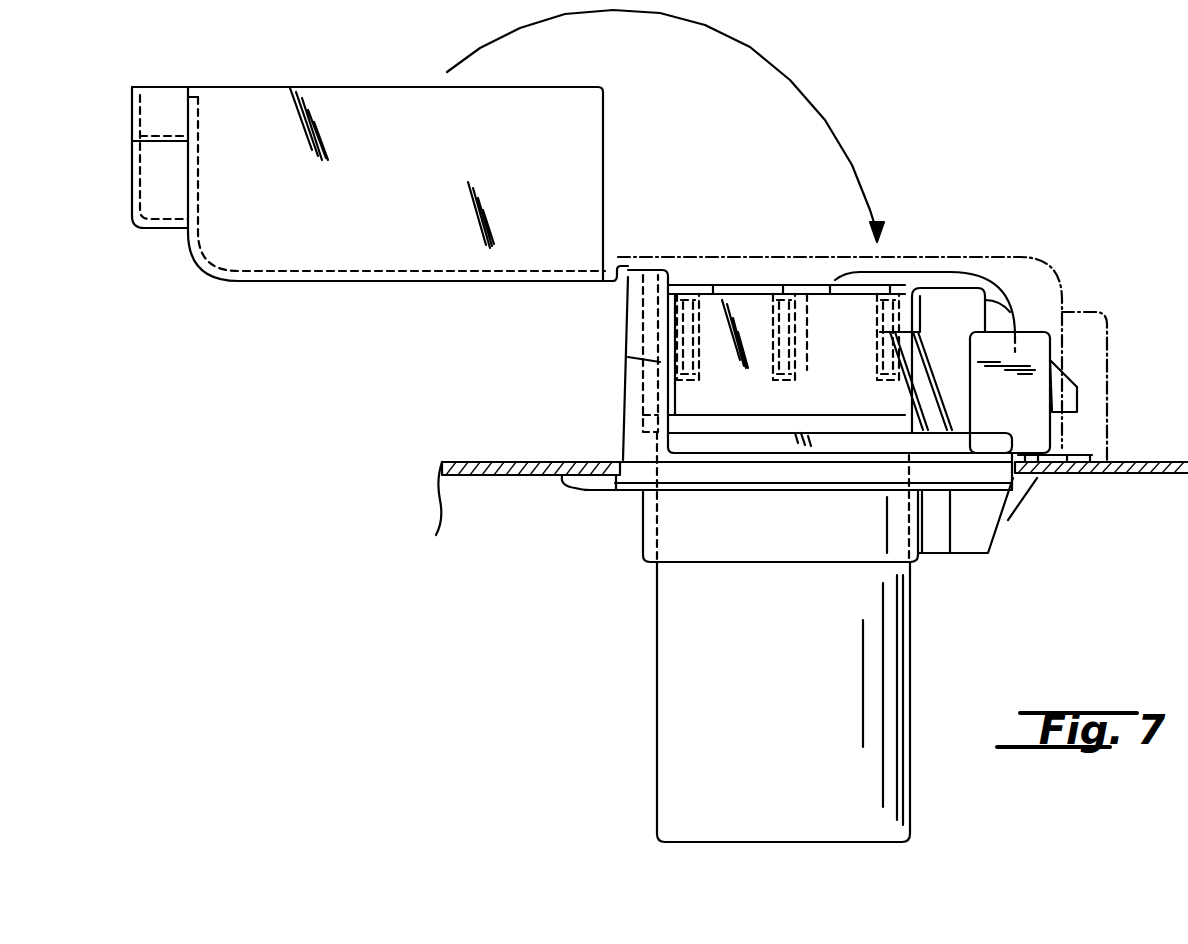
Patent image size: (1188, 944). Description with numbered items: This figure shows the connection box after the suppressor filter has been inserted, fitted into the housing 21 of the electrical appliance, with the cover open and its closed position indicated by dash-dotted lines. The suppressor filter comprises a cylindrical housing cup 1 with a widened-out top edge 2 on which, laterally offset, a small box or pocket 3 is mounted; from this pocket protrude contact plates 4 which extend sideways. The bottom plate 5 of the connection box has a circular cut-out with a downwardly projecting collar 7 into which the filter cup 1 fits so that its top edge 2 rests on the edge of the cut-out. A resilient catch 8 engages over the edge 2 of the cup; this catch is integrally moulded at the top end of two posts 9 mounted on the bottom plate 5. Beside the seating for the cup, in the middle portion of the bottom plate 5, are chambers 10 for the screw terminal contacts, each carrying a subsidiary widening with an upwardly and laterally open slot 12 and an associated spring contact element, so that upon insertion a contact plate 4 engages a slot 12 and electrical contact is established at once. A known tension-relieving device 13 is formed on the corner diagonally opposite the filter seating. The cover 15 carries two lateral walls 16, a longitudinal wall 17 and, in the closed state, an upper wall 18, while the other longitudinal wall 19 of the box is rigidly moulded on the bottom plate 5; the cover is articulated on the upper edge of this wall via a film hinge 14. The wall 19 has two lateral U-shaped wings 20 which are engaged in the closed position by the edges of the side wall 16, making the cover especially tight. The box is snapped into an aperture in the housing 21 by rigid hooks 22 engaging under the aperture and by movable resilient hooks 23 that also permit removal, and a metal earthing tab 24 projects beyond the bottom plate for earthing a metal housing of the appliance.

The housing cup 1 is at (668, 745).
The top edge 2 is at (738, 434).
The box or pocket 3 is at (830, 312).
The contact plate 4 is at (687, 310).
The bottom plate 5 is at (977, 445).
The collar 7 is at (647, 552).
The resilient catch 8 is at (887, 412).
The post 9 is at (930, 398).
The chamber 10 is at (952, 300).
The slot 12 is at (873, 318).
The tension-relieving device 13 is at (1008, 297).
The film hinge 14 is at (622, 278).
The cover 15 is at (320, 286).
The lateral wall 16 is at (378, 113).
The longitudinal wall 17 is at (184, 183).
The upper wall 18 is at (406, 283).
The longitudinal wall 19 is at (635, 335).
The U-shaped wing 20 is at (655, 278).
The housing 21 is at (503, 462).
The rigid hook 22 is at (583, 488).
The resilient hook 23 is at (1018, 487).
The earthing tab 24 is at (1082, 453).